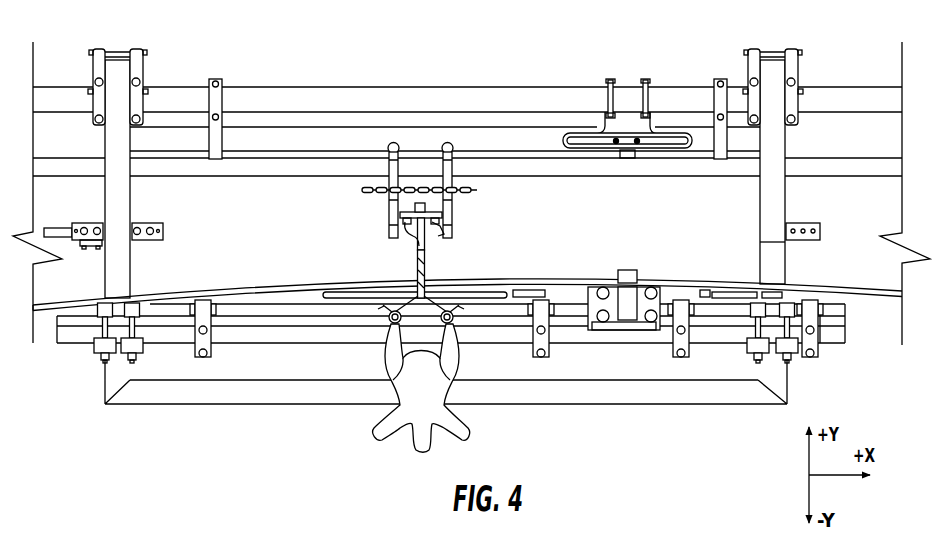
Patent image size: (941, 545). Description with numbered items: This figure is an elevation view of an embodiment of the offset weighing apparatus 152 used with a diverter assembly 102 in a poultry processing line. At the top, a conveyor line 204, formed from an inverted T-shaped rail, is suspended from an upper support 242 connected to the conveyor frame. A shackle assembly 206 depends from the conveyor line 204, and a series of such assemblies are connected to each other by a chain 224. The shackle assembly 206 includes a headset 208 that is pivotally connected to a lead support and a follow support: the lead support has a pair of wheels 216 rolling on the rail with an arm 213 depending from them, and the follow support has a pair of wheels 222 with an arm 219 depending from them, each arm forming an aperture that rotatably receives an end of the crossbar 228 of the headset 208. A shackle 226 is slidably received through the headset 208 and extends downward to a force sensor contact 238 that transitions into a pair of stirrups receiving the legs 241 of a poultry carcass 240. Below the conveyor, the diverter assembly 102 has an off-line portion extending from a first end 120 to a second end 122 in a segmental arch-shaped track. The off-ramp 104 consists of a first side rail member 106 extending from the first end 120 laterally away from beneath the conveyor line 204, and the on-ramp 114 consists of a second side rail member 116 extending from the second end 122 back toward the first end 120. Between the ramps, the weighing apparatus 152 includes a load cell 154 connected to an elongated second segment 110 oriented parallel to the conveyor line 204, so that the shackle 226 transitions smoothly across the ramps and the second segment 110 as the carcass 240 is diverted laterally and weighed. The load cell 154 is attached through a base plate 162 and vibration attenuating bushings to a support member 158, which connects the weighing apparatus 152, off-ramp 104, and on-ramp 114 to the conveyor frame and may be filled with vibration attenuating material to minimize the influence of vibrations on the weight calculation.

The diverter assembly 102 is at (275, 277).
The off-ramp 104 is at (205, 274).
The first side rail member 106 is at (160, 292).
The second segment 110 is at (593, 283).
The on-ramp 114 is at (858, 252).
The second side rail member 116 is at (797, 284).
The first end 120 is at (82, 296).
The second end 122 is at (870, 319).
The weighing apparatus 152 is at (654, 268).
The load cell 154 is at (628, 270).
The support member 158 is at (315, 337).
The base plate 162 is at (604, 300).
The conveyor line 204 is at (230, 171).
The shackle assembly 206 is at (480, 205).
The headset 208 is at (360, 199).
The arm 213 is at (447, 232).
The wheels 216 is at (452, 146).
The arm 219 is at (397, 233).
The wheels 222 is at (389, 146).
The chain 224 is at (478, 187).
The shackle 226 is at (441, 264).
The crossbar 228 is at (388, 220).
The force sensor contact 238 is at (417, 280).
The poultry carcass 240 is at (413, 386).
The legs 241 is at (397, 352).
The upper support 242 is at (496, 98).